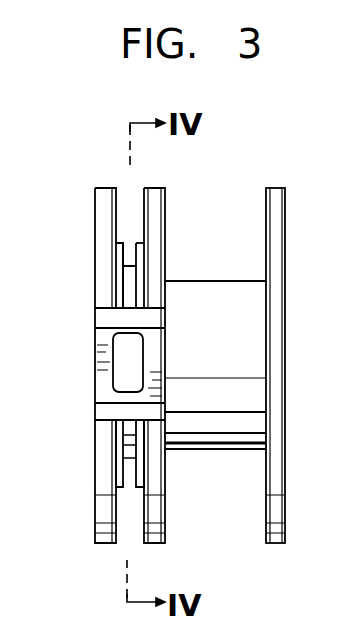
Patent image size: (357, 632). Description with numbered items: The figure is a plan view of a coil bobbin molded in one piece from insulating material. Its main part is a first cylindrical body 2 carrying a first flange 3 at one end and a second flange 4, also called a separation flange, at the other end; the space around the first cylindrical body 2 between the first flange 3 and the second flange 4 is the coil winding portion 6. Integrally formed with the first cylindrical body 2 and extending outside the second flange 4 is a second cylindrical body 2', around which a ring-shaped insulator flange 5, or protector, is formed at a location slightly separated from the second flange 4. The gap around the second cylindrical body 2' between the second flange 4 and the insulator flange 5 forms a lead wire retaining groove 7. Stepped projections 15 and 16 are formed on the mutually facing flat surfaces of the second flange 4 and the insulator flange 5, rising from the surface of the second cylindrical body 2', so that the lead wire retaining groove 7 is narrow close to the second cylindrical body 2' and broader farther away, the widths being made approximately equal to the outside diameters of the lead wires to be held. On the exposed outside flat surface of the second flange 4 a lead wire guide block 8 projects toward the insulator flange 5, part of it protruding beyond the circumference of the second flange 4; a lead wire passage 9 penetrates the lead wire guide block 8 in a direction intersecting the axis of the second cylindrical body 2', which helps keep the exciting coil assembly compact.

The first cylindrical body 2 is at (215, 387).
The second cylindrical body 2' is at (171, 483).
The first flange 3 is at (272, 542).
The second flange 4 is at (157, 518).
The insulator flange 5 is at (100, 542).
The coil winding portion 6 is at (238, 255).
The lead wire retaining groove 7 is at (128, 222).
The lead wire guide block 8 is at (108, 313).
The lead wire passage 9 is at (135, 372).
The stepped projection 15 is at (143, 252).
The stepped projection 16 is at (117, 250).